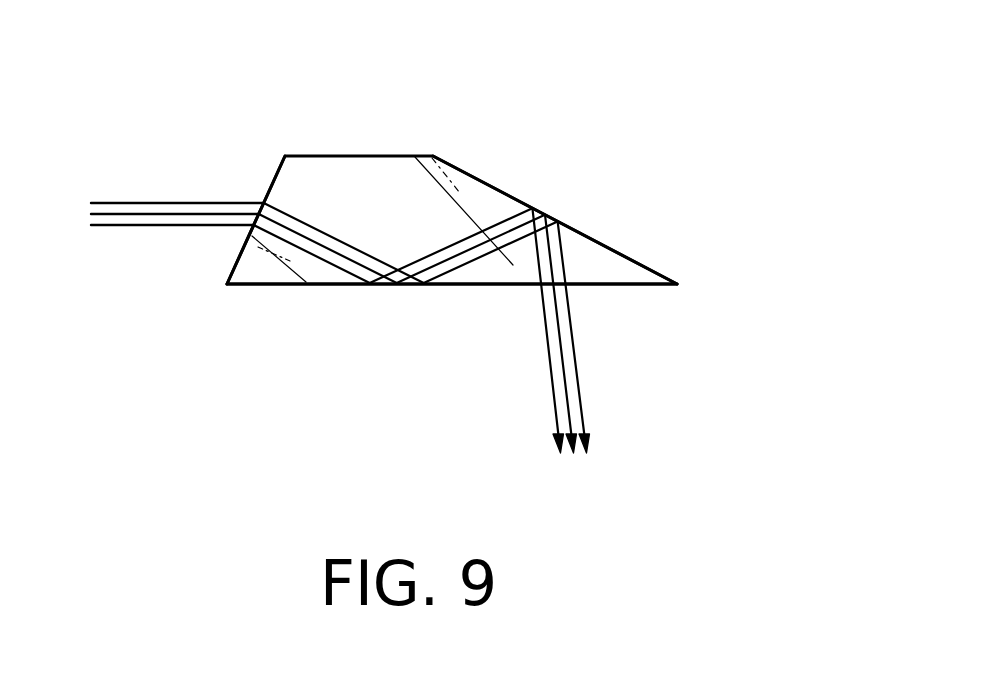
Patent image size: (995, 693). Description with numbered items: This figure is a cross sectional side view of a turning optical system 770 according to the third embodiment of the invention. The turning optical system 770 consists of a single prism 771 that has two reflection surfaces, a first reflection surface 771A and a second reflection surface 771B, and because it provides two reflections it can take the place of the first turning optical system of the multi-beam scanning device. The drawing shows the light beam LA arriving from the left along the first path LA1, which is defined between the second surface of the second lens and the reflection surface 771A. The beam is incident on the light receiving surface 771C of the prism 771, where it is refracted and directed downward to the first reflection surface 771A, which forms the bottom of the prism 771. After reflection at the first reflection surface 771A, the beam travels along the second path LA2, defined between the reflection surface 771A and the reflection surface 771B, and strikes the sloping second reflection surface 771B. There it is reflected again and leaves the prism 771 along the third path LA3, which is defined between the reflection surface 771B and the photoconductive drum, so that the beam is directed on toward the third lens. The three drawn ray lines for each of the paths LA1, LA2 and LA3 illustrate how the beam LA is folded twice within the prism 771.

The turning optical system 770 is at (457, 198).
The prism 771 is at (358, 155).
The first reflection surface 771A is at (489, 283).
The second reflection surface 771B is at (606, 249).
The light receiving surface 771C is at (278, 167).
The light beam LA is at (177, 229).
The first path LA1 is at (157, 200).
The second path LA2 is at (570, 180).
The third path LA3 is at (578, 360).